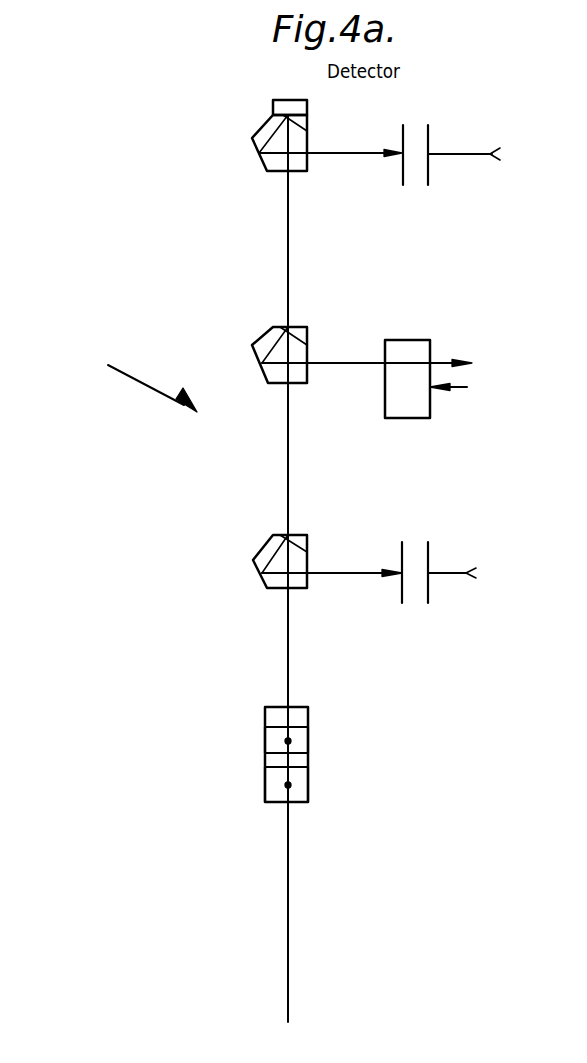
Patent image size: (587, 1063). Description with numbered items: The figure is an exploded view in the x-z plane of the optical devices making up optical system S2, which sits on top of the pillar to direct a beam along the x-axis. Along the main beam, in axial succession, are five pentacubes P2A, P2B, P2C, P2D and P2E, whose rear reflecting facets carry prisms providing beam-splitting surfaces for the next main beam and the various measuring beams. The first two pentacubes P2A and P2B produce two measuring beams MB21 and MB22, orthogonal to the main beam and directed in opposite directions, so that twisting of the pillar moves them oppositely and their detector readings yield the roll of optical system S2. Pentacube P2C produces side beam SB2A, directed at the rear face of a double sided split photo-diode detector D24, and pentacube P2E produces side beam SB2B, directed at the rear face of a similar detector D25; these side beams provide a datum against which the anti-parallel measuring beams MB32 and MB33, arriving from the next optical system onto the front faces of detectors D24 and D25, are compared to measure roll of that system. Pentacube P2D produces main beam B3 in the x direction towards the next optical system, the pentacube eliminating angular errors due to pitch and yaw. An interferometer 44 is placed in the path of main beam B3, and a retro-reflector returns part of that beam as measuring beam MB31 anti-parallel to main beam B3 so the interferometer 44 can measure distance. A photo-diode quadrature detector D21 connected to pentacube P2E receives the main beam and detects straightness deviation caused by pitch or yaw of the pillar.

The pentacube P2E is at (252, 141).
The photo-diode quadrature detector D21 is at (307, 107).
The side beam SB2B is at (350, 158).
The measuring beam MB33 is at (477, 153).
The double sided split photo-diode detector D25 is at (415, 183).
The pentacube P2D is at (262, 334).
The main beam B3 is at (443, 362).
The measuring beam MB31 is at (458, 387).
The interferometer 44 is at (407, 418).
The optical system S2 is at (150, 370).
The pentacube P2C is at (262, 548).
The side beam SB2A is at (358, 575).
The measuring beam MB32 is at (453, 568).
The double sided split photo-diode detector D24 is at (417, 593).
The measuring beam MB22 is at (286, 741).
The measuring beam MB21 is at (286, 785).
The pentacube P2B is at (310, 740).
The pentacube P2A is at (310, 785).